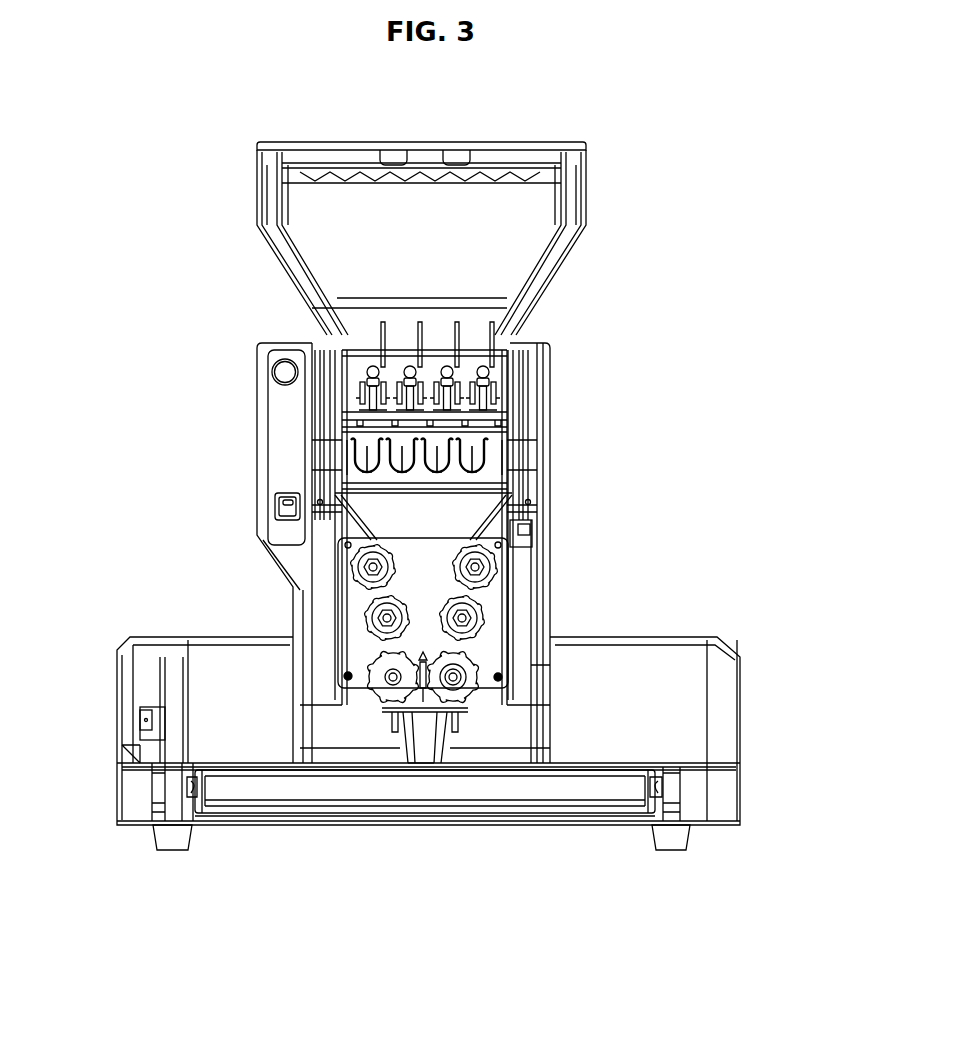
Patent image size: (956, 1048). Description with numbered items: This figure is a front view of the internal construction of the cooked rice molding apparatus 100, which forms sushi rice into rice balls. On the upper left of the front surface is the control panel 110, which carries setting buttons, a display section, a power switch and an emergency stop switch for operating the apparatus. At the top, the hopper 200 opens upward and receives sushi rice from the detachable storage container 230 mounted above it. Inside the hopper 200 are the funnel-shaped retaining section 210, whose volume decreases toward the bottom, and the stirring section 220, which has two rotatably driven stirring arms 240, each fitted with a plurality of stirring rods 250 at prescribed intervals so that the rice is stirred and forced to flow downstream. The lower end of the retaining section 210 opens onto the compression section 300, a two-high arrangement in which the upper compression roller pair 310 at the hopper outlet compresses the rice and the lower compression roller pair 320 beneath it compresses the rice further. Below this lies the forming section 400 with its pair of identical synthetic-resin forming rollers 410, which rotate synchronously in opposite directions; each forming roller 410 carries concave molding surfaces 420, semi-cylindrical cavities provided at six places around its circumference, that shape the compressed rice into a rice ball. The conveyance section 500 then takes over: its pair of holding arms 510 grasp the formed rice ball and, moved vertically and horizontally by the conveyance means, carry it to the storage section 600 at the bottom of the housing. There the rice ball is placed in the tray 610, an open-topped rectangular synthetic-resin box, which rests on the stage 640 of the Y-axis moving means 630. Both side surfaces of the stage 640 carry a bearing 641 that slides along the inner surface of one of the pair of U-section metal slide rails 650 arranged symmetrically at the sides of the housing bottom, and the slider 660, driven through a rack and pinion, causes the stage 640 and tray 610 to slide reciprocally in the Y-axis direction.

The cooked rice molding apparatus 100 is at (449, 553).
The control panel 110 is at (268, 417).
The hopper 200 is at (487, 238).
The retaining section 210 is at (523, 452).
The stirring section 220 is at (517, 375).
The storage container 230 is at (567, 263).
The stirring arm 240 is at (520, 430).
The stirring rod 250 is at (422, 322).
The compression section 300 is at (410, 590).
The upper compression roller pair 310 is at (347, 567).
The lower compression roller pair 320 is at (365, 618).
The forming section 400 is at (421, 666).
The forming roller 410 is at (343, 676).
The concave molding surface 420 is at (417, 674).
The conveyance section 500 is at (424, 791).
The holding arm 510 is at (400, 738).
The storage section 600 is at (423, 780).
The tray 610 is at (480, 800).
The Y-axis moving means 630 is at (249, 853).
The stage 640 is at (530, 823).
The bearing 641 is at (183, 833).
The slide rail 650 is at (187, 788).
The slider 660 is at (138, 720).